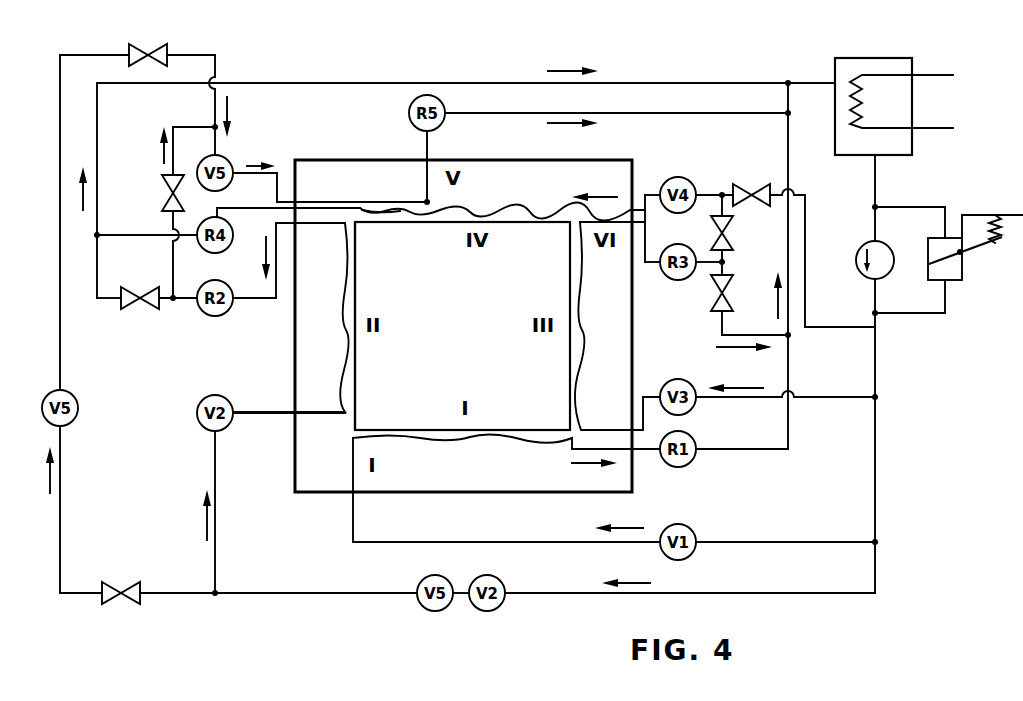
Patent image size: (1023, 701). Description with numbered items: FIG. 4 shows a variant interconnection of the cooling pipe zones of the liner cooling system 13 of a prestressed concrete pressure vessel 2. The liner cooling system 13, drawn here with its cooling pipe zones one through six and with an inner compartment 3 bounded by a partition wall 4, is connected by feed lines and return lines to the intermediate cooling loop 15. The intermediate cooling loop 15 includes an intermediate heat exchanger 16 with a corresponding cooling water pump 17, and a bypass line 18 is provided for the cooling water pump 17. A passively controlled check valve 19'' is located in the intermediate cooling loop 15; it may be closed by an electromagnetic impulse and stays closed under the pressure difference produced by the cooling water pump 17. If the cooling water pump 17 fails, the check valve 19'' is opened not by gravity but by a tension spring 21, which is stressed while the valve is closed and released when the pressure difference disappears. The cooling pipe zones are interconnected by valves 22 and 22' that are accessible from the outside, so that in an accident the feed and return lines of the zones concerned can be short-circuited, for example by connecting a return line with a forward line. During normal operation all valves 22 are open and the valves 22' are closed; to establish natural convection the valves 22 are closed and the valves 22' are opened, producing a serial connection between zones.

The prestressed concrete pressure vessel 2 is at (300, 333).
The inner compartment 3 is at (380, 410).
The partition wall 4 is at (355, 385).
The liner cooling system 13 is at (370, 212).
The intermediate cooling loop 15 is at (716, 82).
The intermediate heat exchanger 16 is at (866, 58).
The cooling water pump 17 is at (857, 255).
The bypass line 18 is at (918, 207).
The passively controlled check valve 19'' is at (975, 274).
The tension spring 21 is at (992, 214).
The valve 22 is at (433, 197).
The valve 22' is at (448, 212).